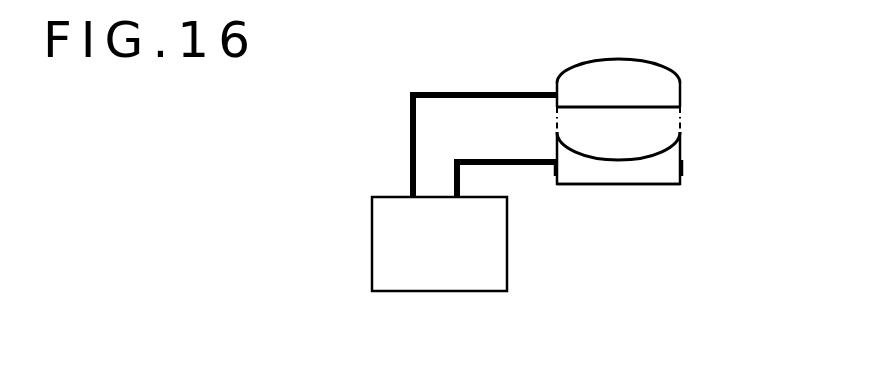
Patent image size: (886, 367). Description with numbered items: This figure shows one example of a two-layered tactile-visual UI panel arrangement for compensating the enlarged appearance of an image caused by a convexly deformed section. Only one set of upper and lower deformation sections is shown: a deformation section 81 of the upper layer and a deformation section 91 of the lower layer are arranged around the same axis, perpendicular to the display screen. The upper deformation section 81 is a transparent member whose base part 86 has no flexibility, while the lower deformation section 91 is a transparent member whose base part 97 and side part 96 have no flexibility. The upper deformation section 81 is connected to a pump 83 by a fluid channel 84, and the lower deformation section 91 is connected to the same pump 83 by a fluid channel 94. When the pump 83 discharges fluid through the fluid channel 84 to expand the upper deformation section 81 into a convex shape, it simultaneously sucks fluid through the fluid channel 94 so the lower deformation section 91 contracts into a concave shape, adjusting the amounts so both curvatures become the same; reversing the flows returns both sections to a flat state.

The deformation section of the upper layer 81 is at (620, 58).
The base part 86 is at (661, 105).
The deformation section of the lower layer 91 is at (660, 186).
The base part 97 is at (594, 186).
The fluid channel 84 is at (410, 108).
The fluid channel 94 is at (475, 158).
The side part 96 is at (555, 171).
The pump 83 is at (370, 236).